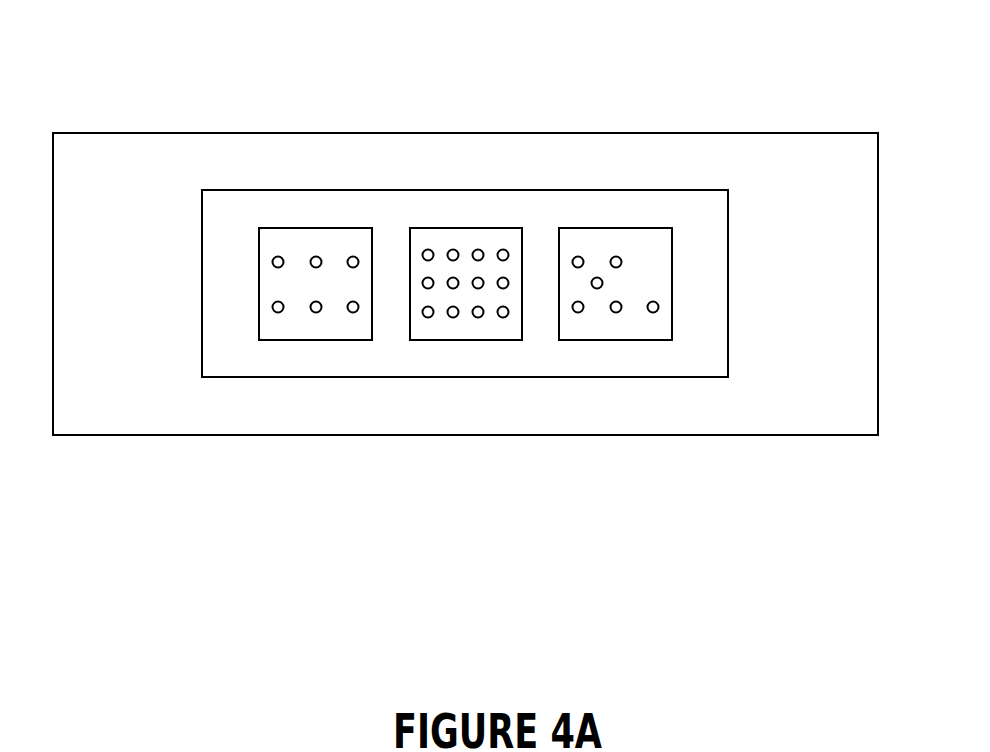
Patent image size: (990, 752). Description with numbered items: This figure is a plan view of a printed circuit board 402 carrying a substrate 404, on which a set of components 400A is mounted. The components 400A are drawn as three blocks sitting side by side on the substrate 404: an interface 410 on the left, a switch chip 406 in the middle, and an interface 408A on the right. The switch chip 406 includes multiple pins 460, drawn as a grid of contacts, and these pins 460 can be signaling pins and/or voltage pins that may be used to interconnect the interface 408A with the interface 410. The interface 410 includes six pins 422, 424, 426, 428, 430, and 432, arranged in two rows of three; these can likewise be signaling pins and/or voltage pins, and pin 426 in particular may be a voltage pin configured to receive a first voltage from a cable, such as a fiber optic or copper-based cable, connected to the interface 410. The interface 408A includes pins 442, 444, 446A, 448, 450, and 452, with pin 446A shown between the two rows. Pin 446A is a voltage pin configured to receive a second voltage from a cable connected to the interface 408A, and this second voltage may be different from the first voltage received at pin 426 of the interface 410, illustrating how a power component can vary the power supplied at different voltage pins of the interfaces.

The components 400A is at (140, 88).
The printed circuit board 402 is at (878, 281).
The substrate 404 is at (728, 281).
The switch chip 406 is at (466, 298).
The interface 408A is at (615, 298).
The interface 410 is at (315, 298).
The pin 422 is at (278, 256).
The pin 424 is at (316, 256).
The pin 426 is at (353, 256).
The pin 428 is at (274, 311).
The pin 430 is at (318, 312).
The pin 432 is at (354, 312).
The pin 442 is at (578, 256).
The pin 444 is at (616, 256).
The pin 446A is at (603, 283).
The pin 448 is at (574, 310).
The pin 450 is at (618, 312).
The pin 452 is at (654, 312).
The pins 460 is at (428, 249).